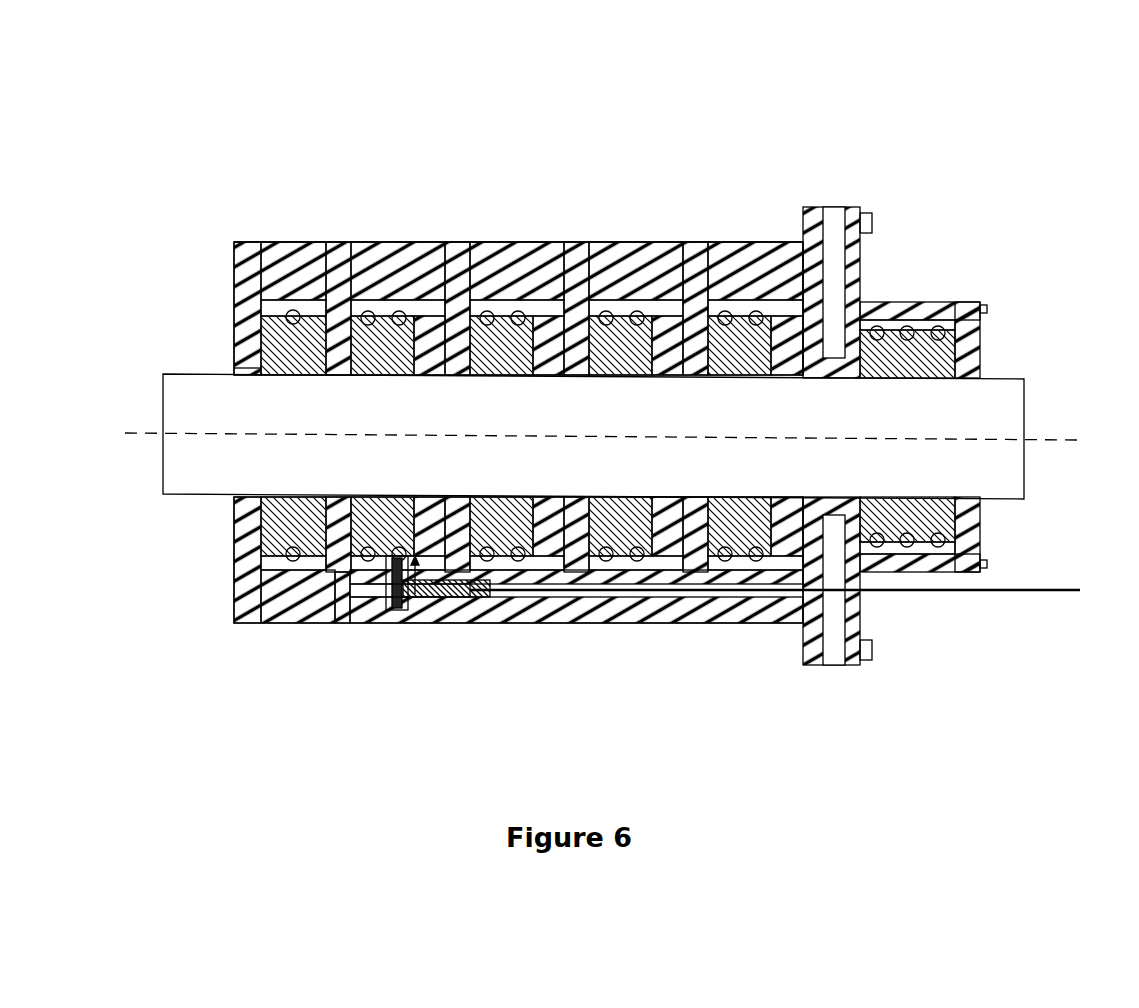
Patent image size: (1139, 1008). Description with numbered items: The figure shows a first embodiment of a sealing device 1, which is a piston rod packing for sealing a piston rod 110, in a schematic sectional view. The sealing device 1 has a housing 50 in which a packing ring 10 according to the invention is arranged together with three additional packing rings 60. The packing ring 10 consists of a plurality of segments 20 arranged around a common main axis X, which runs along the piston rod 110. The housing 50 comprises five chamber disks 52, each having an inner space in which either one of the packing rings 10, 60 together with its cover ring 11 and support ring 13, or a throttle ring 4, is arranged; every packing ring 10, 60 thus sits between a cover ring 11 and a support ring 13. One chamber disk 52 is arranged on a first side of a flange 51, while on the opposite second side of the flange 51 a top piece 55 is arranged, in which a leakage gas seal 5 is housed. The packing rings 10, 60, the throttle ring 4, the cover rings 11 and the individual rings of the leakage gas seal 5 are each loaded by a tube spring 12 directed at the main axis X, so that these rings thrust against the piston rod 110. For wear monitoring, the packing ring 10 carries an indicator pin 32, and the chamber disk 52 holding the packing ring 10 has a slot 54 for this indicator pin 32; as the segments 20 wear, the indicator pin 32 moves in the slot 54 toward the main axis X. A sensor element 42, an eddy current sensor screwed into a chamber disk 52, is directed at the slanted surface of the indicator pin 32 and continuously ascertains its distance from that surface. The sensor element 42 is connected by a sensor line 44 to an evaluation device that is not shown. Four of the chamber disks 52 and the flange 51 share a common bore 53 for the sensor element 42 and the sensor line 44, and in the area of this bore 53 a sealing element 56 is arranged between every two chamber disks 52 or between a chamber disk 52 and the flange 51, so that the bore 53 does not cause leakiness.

The sealing device 1 is at (993, 136).
The throttle ring 4 is at (312, 325).
The leakage gas seal 5 is at (925, 320).
The packing ring 10 is at (412, 628).
The cover ring 11 is at (392, 310).
The tube spring 12 is at (432, 330).
The support ring 13 is at (445, 300).
The segments 20 is at (402, 358).
The indicator pin 32 is at (393, 608).
The sensor element 42 is at (473, 600).
The sensor line 44 is at (1052, 594).
The housing 50 is at (213, 236).
The flange 51 is at (845, 212).
The chamber disk 52 is at (253, 244).
The bore 53 is at (770, 600).
The slot 54 is at (402, 612).
The top piece 55 is at (967, 336).
The sealing element 56 is at (593, 600).
The additional packing rings 60 is at (546, 345).
The piston rod 110 is at (207, 405).
The main axis X is at (1043, 440).